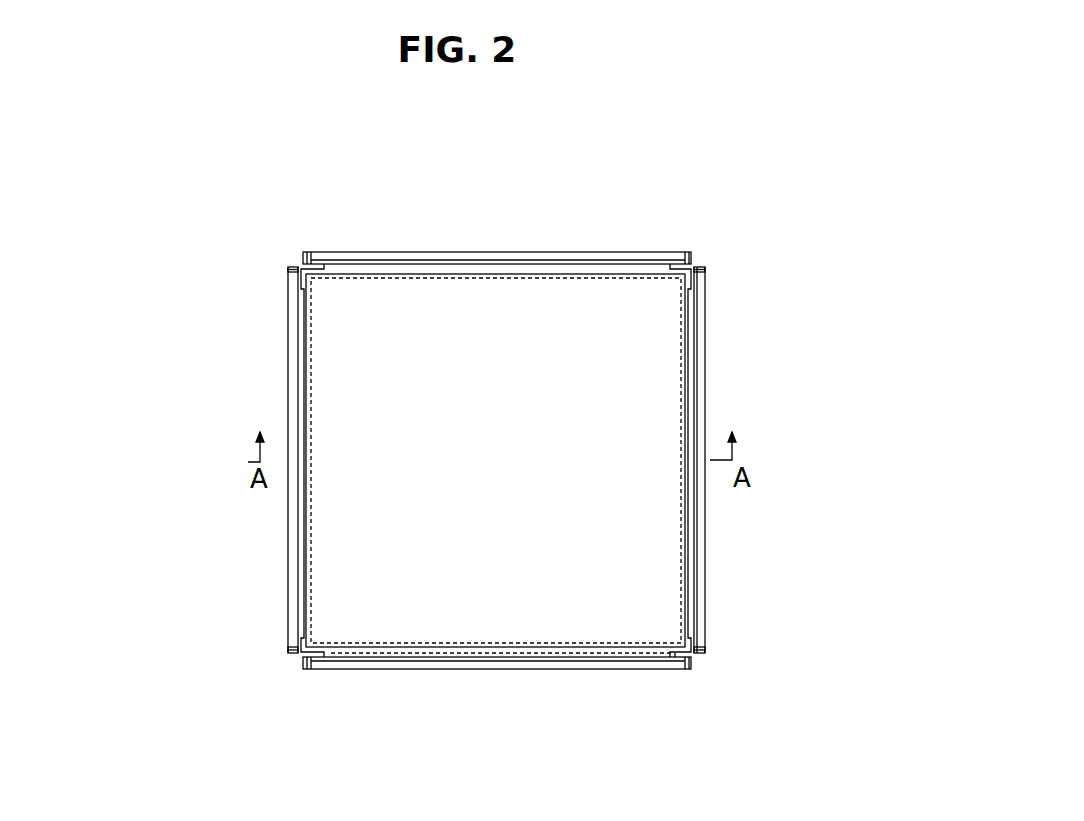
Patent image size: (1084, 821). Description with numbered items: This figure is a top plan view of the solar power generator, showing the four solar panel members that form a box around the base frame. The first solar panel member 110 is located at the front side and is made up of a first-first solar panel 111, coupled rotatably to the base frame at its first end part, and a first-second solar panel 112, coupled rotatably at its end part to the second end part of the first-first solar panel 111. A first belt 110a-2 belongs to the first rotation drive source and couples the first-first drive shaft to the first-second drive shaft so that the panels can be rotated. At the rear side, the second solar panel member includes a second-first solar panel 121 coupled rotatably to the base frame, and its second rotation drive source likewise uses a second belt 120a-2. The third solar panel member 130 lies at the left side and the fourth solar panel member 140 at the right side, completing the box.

The first solar panel member for forming a box 110 is at (173, 512).
The 1-1 solar panel for forming a box 111 is at (292, 528).
The 1-2 solar panel for forming a box 112 is at (358, 597).
The first belt 110a-2 is at (290, 268).
The 2-1 solar panel for forming a box 121 is at (700, 382).
The second belt 120a-2 is at (706, 654).
The third solar panel member for forming a box 130 is at (490, 663).
The fourth solar panel member for forming a box 140 is at (495, 258).